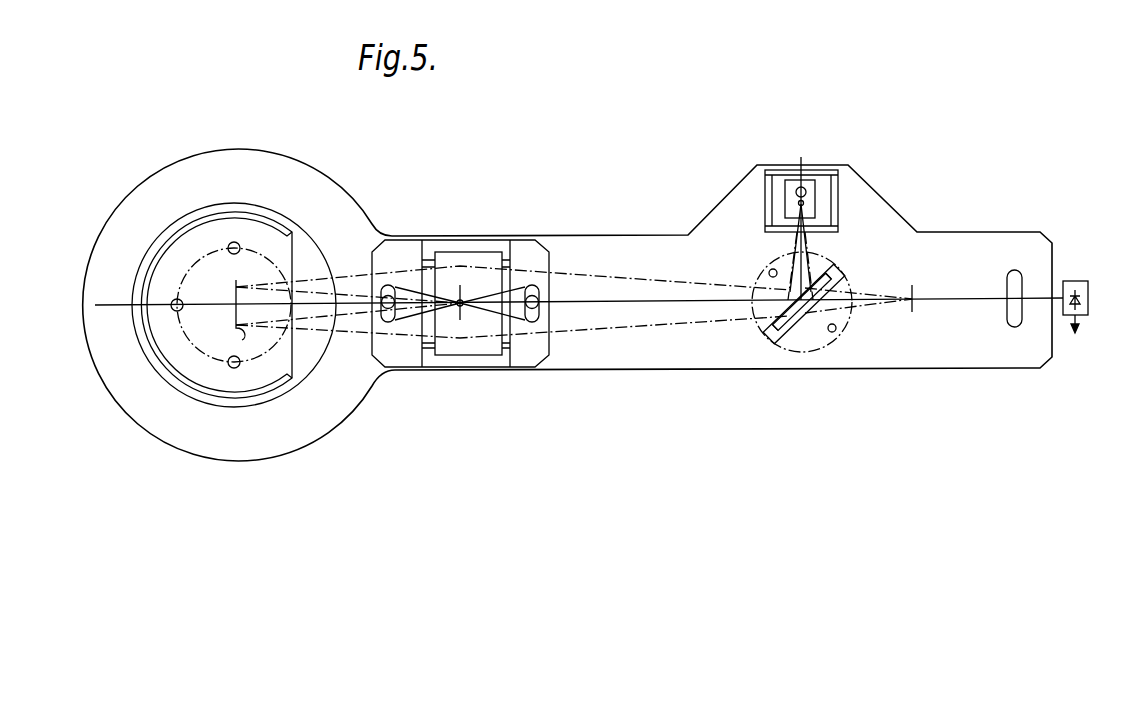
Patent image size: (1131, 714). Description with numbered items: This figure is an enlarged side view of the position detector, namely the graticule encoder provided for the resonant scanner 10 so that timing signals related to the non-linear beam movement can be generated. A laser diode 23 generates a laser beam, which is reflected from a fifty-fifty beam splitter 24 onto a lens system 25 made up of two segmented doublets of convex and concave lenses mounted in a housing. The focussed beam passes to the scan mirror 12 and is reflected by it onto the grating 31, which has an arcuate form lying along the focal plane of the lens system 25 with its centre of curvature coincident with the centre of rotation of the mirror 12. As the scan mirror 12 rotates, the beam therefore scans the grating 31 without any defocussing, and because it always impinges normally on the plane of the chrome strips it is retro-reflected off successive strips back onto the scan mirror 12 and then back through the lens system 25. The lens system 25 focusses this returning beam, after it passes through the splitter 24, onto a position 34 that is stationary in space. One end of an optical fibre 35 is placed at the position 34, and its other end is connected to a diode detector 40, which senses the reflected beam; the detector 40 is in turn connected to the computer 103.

The resonant scanner 10 is at (289, 153).
The scan mirror 12 is at (242, 340).
The laser diode 23 is at (803, 201).
The 50/50 beam splitter 24 is at (793, 333).
The lens system 25 is at (472, 369).
The grating 31 is at (461, 300).
The position 34 is at (915, 304).
The optical fibre 35 is at (945, 297).
The diode detector 40 is at (1088, 290).
The computer 103 is at (1083, 336).